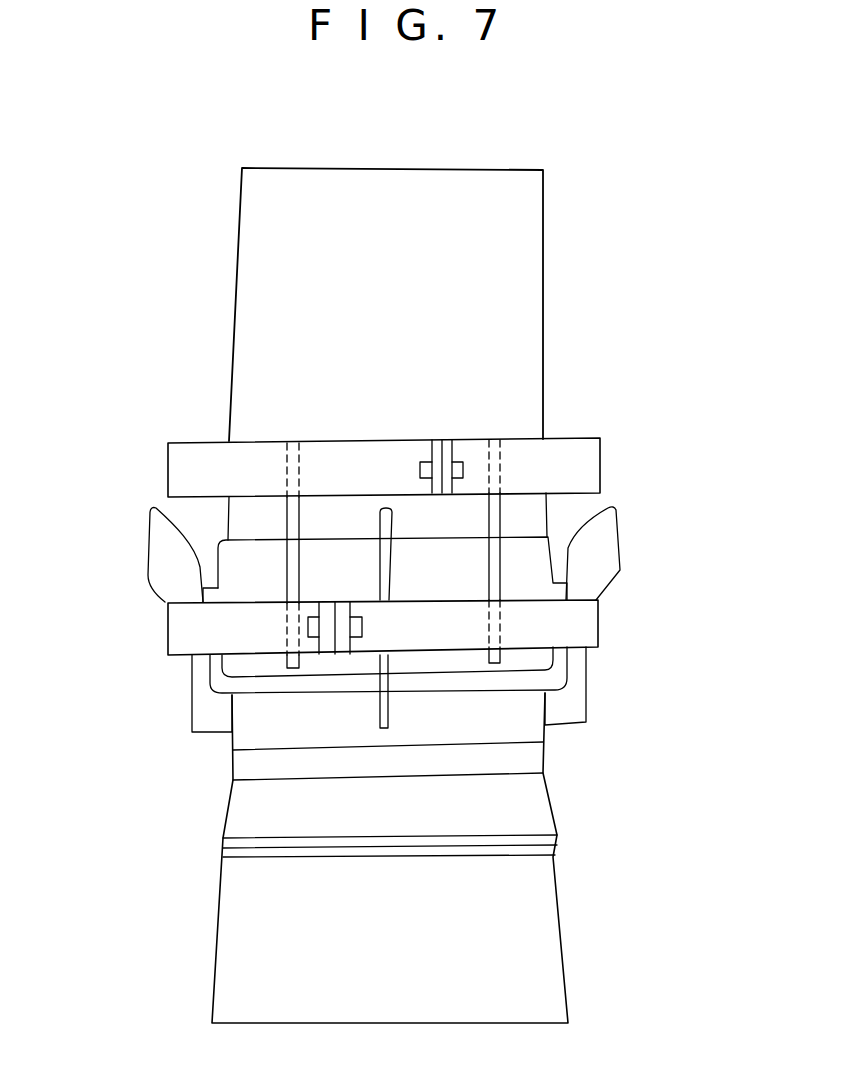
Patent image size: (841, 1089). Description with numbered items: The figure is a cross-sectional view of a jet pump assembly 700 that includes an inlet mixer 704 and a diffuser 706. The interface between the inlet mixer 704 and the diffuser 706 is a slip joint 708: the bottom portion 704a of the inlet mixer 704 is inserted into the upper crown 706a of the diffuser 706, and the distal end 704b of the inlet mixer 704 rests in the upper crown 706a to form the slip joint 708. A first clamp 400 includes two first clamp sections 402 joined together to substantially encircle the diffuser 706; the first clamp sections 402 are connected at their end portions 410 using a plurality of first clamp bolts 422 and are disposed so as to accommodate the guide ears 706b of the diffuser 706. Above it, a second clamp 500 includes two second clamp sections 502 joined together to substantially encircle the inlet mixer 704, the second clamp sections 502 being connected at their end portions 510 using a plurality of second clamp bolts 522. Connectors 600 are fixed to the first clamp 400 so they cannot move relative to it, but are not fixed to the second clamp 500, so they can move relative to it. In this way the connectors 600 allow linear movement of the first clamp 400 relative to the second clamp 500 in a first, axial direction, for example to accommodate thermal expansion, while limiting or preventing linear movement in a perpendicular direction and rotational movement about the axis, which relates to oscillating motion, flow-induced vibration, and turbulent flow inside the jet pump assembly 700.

The jet pump assembly 700 is at (134, 322).
The inlet mixer 704 is at (546, 250).
The bottom portion 704a is at (557, 542).
The distal end 704b is at (230, 673).
The diffuser 706 is at (567, 962).
The upper crown 706a is at (565, 591).
The guide ears 706b is at (165, 563).
The slip joint 708 is at (562, 690).
The second clamp 500 is at (170, 471).
The second clamp sections 502 is at (590, 463).
The end portions 510 is at (445, 437).
The second clamp bolts 522 is at (420, 468).
The first clamp 400 is at (168, 640).
The first clamp sections 402 is at (592, 622).
The end portions 410 is at (340, 654).
The first clamp bolts 422 is at (370, 630).
The connectors 600 is at (300, 515).